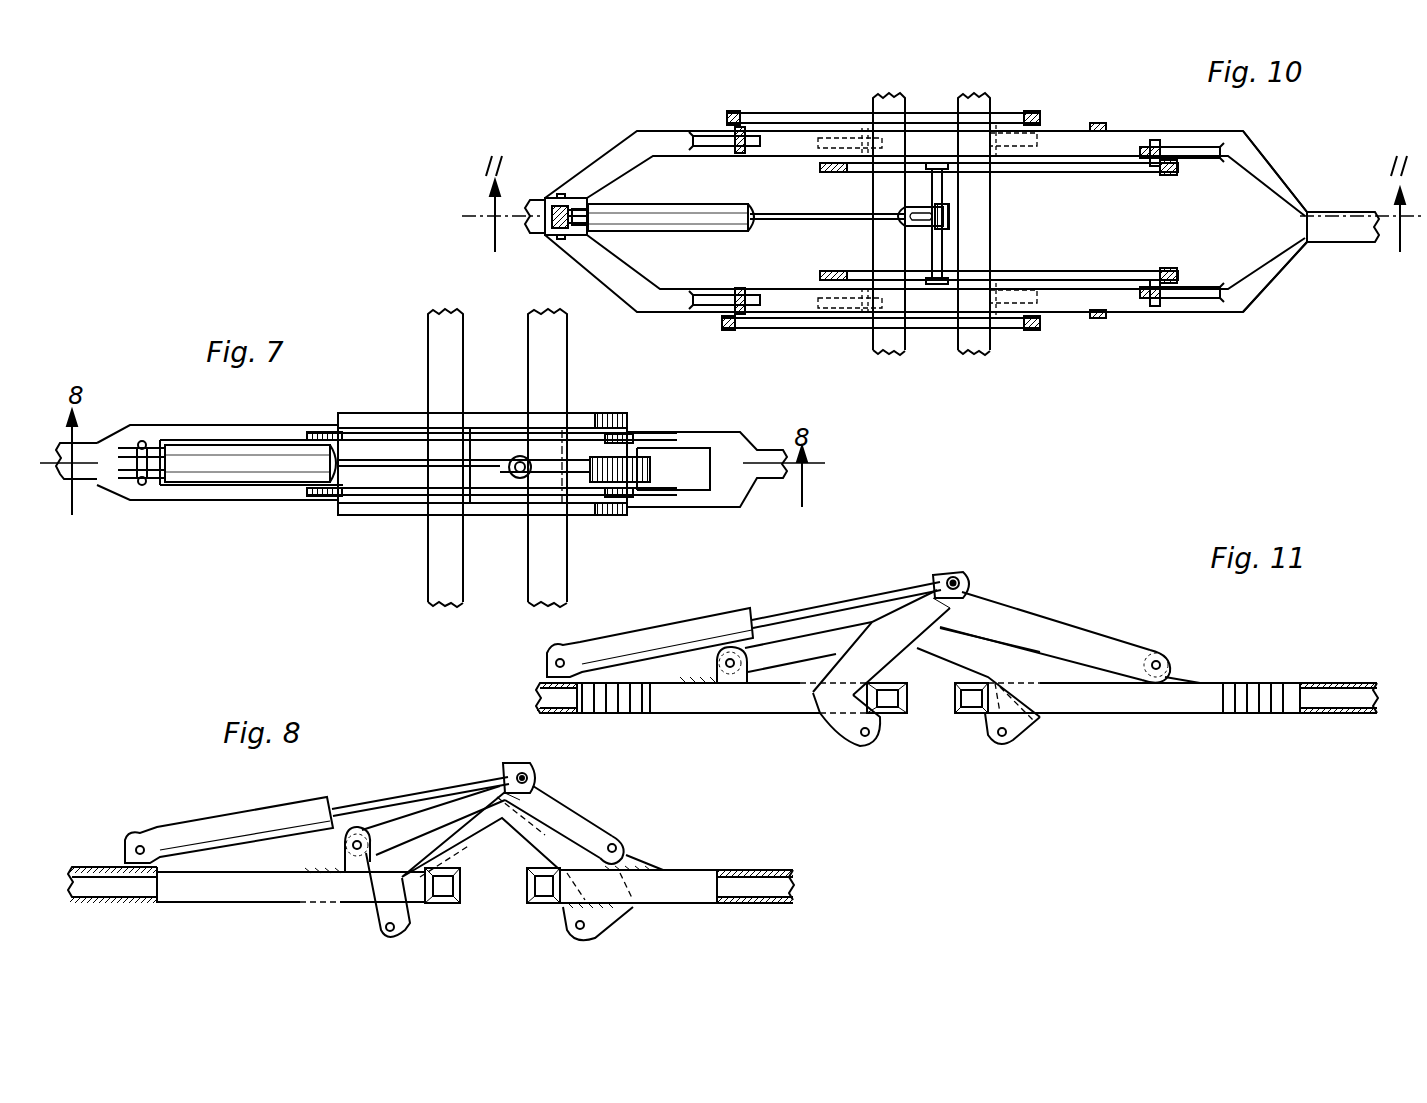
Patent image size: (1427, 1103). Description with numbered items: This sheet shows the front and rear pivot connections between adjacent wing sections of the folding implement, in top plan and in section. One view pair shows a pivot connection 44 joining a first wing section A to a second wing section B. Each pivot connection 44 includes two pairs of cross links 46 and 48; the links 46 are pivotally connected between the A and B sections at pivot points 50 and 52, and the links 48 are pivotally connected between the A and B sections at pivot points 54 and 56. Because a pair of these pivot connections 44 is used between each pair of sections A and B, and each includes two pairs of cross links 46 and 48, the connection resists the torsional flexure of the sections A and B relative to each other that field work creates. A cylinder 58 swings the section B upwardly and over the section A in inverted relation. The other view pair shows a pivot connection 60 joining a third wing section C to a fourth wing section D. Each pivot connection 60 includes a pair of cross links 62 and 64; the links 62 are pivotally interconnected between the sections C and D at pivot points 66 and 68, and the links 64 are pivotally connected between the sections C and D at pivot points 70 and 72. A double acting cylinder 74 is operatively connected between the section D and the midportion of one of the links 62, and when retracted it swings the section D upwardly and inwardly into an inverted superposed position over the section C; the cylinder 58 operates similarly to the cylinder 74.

In FIG. 10, the pivot connection 44 is at (1021, 334).
In FIG. 11, the pivot connection 44 is at (990, 604).
In FIG. 10, the cross links 46 is at (786, 118).
In FIG. 11, the cross links 46 is at (833, 623).
In FIG. 10, the cross links 48 is at (1075, 280).
In FIG. 11, the cross links 48 is at (1040, 638).
In FIG. 10, the pivot point 50 is at (1015, 318).
In FIG. 11, the pivot point 50 is at (1002, 737).
In FIG. 10, the pivot point 52 is at (745, 293).
In FIG. 11, the pivot point 52 is at (733, 673).
In FIG. 10, the pivot point 54 is at (1172, 288).
In FIG. 11, the pivot point 54 is at (1153, 662).
In FIG. 10, the pivot point 56 is at (858, 292).
In FIG. 11, the pivot point 56 is at (865, 742).
In FIG. 10, the cylinder 58 is at (667, 215).
In FIG. 11, the cylinder 58 is at (668, 638).
In FIG. 7, the pivot connection 60 is at (511, 518).
In FIG. 8, the pivot connection 60 is at (492, 767).
In FIG. 8, the cross links 62 is at (577, 818).
In FIG. 8, the cross links 64 is at (525, 835).
In FIG. 8, the pivot point 66 is at (617, 847).
In FIG. 8, the pivot point 68 is at (407, 930).
In FIG. 8, the pivot point 70 is at (587, 930).
In FIG. 8, the pivot point 72 is at (353, 858).
In FIG. 7, the double acting cylinder 74 is at (262, 467).
In FIG. 8, the double acting cylinder 74 is at (313, 810).
In FIG. 10, the wing section A is at (1193, 313).
In FIG. 11, the wing section A is at (1202, 702).
In FIG. 10, the wing section B is at (672, 288).
In FIG. 11, the wing section B is at (683, 700).
In FIG. 7, the wing section C is at (550, 397).
In FIG. 8, the wing section C is at (703, 875).
In FIG. 7, the wing section D is at (440, 548).
In FIG. 8, the wing section D is at (302, 882).